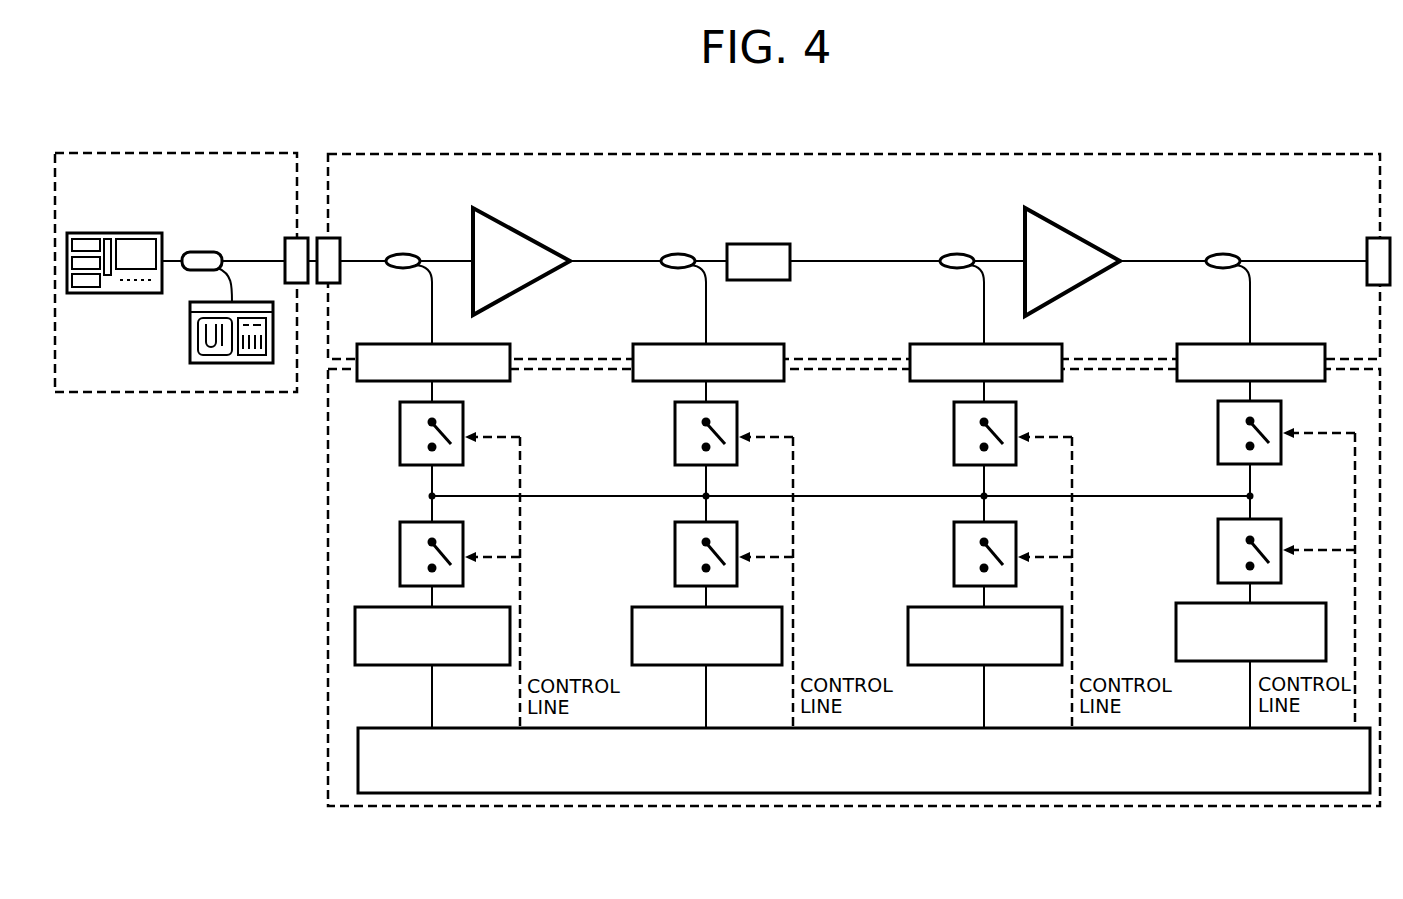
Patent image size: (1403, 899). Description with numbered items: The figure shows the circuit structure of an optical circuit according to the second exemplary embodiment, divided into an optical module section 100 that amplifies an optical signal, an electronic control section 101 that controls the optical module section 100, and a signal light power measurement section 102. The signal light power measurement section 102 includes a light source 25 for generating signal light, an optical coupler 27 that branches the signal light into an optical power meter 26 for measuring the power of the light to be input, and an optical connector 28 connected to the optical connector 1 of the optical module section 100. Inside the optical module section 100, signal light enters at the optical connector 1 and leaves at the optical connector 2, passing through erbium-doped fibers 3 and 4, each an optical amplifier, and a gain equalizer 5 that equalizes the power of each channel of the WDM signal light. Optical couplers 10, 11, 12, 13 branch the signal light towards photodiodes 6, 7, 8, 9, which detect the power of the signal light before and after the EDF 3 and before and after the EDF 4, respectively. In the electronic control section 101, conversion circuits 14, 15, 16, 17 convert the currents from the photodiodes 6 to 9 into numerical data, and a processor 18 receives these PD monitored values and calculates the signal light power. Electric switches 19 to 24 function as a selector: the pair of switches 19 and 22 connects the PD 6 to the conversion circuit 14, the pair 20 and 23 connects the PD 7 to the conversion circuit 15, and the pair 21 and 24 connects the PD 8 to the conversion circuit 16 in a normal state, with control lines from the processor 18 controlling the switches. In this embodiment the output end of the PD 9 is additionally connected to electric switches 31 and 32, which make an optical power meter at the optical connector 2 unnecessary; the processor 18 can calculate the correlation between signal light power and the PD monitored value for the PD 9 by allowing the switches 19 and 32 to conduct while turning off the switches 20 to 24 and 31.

The optical connector 1 is at (334, 238).
The optical connector 2 is at (1372, 238).
The erbium-doped fiber 3 is at (521, 231).
The erbium-doped fiber 4 is at (1070, 231).
The gain equalizer 5 is at (775, 244).
The photodiode 6 is at (500, 344).
The photodiode 7 is at (775, 345).
The photodiode 8 is at (1055, 344).
The photodiode 9 is at (1318, 344).
The optical coupler 10 is at (400, 254).
The optical coupler 11 is at (678, 254).
The optical coupler 12 is at (957, 254).
The optical coupler 13 is at (1223, 254).
The conversion circuit 14 is at (392, 607).
The conversion circuit 15 is at (664, 607).
The conversion circuit 16 is at (944, 607).
The conversion circuit 17 is at (1204, 603).
The processor 18 is at (392, 728).
The electric switch 19 is at (400, 440).
The electric switch 20 is at (675, 440).
The electric switch 21 is at (954, 440).
The electric switch 22 is at (400, 540).
The electric switch 23 is at (675, 540).
The electric switch 24 is at (954, 540).
The light source 25 is at (105, 233).
The optical power meter 26 is at (190, 354).
The optical coupler 27 is at (202, 252).
The optical connector 28 is at (291, 238).
The electric switch 31 is at (1218, 440).
The electric switch 32 is at (1218, 537).
The optical module section 100 is at (360, 153).
The electronic control section 101 is at (328, 452).
The signal light power measurement section 102 is at (178, 153).